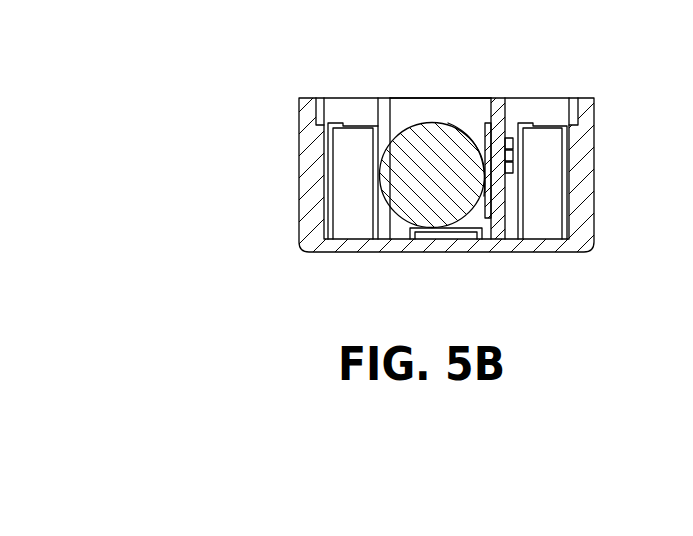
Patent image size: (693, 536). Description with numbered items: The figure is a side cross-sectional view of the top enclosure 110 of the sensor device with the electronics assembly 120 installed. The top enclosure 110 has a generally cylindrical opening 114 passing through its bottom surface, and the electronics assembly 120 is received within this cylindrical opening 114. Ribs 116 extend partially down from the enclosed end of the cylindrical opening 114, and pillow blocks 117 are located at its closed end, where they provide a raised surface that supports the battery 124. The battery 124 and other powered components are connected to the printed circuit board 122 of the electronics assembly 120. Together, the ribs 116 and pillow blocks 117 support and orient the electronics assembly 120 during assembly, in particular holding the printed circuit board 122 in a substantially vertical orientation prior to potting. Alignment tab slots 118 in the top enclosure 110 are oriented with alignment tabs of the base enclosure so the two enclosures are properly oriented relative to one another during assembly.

The top enclosure 110 is at (299, 148).
The cylindrical opening 114 is at (470, 90).
The ribs 116 is at (355, 128).
The pillow blocks 117 is at (427, 237).
The alignment tab slots 118 is at (318, 104).
The electronics assembly 120 is at (495, 108).
The printed circuit board 122 is at (498, 232).
The battery 124 is at (436, 125).